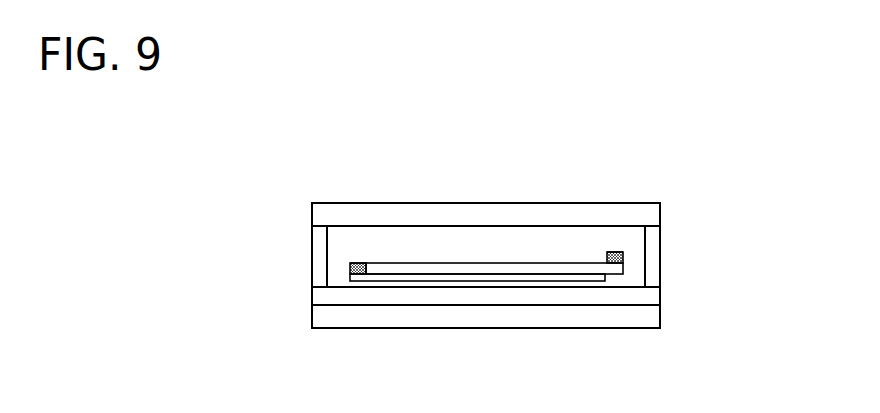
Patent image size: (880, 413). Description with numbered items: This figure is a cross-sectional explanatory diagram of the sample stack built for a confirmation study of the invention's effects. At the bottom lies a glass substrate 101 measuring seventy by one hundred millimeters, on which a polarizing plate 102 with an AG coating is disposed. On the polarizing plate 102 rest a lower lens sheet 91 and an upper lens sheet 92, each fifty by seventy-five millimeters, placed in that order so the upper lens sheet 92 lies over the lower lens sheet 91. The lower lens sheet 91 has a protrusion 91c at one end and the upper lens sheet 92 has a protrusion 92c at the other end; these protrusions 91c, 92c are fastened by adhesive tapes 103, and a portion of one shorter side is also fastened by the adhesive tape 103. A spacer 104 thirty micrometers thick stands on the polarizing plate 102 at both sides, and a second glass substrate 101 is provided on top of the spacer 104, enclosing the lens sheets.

The glass substrate 101 is at (318, 212).
The polarizing plate 102 is at (318, 293).
The adhesive tape 103 is at (360, 263).
The spacer 104 is at (318, 255).
The lower lens sheet 91 is at (453, 279).
The protrusion of the lower lens sheet 91c is at (357, 282).
The upper lens sheet 92 is at (518, 268).
The protrusion of the upper lens sheet 92c is at (613, 273).